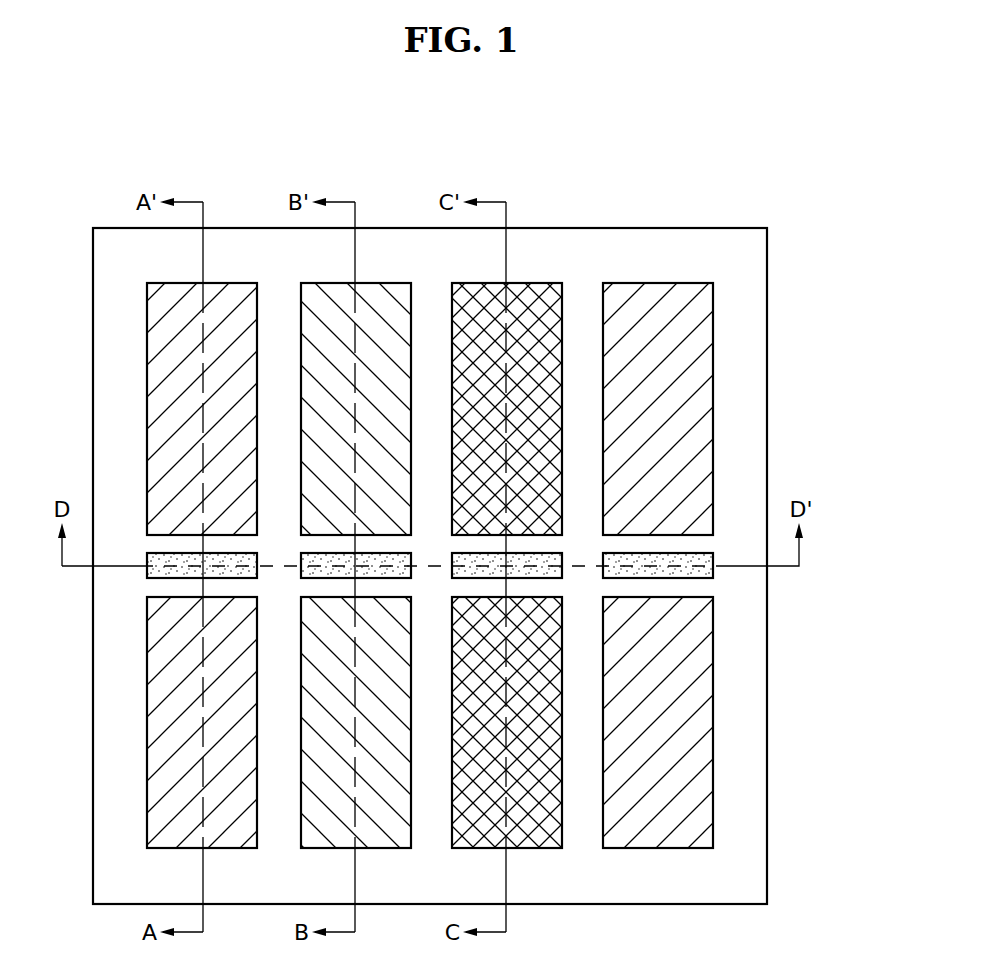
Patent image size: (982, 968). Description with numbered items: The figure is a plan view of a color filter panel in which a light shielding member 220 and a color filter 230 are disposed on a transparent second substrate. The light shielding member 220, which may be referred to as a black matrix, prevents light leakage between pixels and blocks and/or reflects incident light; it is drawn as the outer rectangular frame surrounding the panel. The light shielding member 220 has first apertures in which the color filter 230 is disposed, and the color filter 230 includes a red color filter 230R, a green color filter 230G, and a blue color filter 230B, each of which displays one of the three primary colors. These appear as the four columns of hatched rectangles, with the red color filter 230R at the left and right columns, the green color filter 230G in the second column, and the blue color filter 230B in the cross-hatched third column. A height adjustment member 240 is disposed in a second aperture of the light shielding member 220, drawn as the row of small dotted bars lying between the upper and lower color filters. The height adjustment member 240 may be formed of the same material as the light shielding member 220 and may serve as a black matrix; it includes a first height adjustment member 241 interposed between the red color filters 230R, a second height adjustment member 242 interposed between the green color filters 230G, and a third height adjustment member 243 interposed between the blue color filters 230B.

The light shielding member 220 is at (656, 250).
The color filter 230 is at (541, 167).
The red color filter 230R is at (232, 305).
The green color filter 230G is at (384, 305).
The blue color filter 230B is at (539, 305).
The height adjustment member 240 is at (835, 585).
The first height adjustment member 241 is at (168, 575).
The second height adjustment member 242 is at (372, 578).
The third height adjustment member 243 is at (525, 578).